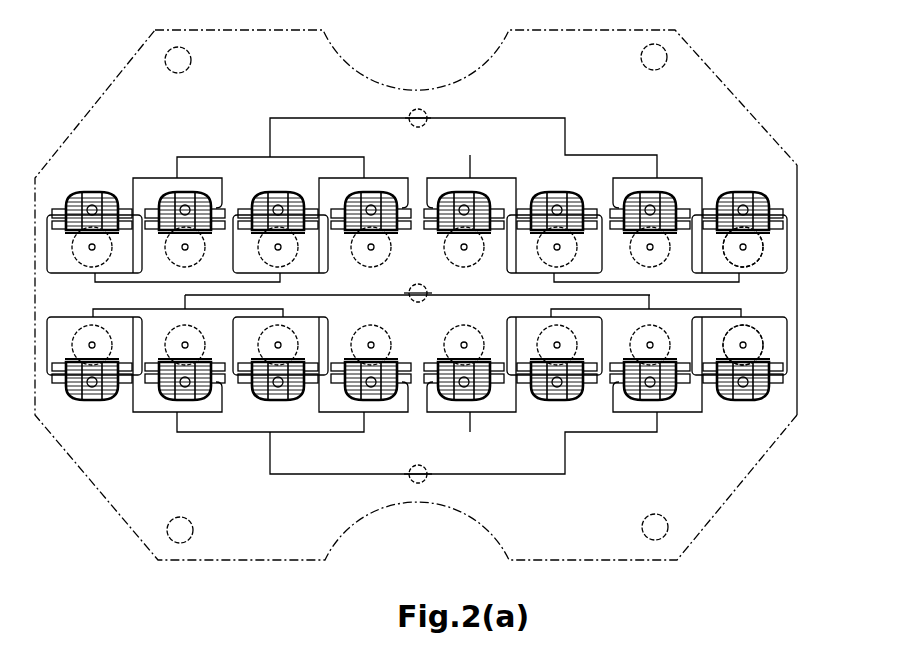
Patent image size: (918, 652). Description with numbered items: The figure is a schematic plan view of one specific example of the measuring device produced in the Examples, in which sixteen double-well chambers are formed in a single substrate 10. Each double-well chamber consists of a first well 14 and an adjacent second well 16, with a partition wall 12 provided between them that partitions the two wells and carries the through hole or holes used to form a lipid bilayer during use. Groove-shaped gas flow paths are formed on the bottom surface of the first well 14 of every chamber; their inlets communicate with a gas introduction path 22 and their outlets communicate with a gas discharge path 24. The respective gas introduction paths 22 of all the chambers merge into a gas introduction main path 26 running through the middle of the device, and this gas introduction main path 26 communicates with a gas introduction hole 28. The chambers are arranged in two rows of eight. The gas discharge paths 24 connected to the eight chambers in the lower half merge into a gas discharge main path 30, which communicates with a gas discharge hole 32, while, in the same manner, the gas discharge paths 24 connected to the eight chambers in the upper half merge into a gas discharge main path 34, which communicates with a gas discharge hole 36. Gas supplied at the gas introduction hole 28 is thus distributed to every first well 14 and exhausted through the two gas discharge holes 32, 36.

The substrate 10 is at (722, 470).
The partition wall 12 is at (758, 226).
The first well 14 is at (762, 193).
The second well 16 is at (752, 343).
The gas introduction path 22 is at (800, 213).
The gas discharge path 24 is at (708, 200).
The gas introduction main path 26 is at (486, 295).
The gas introduction hole 28 is at (418, 284).
The gas discharge main path 30 is at (522, 476).
The gas discharge hole 32 is at (419, 483).
The gas discharge main path 34 is at (508, 118).
The gas discharge hole 36 is at (416, 108).